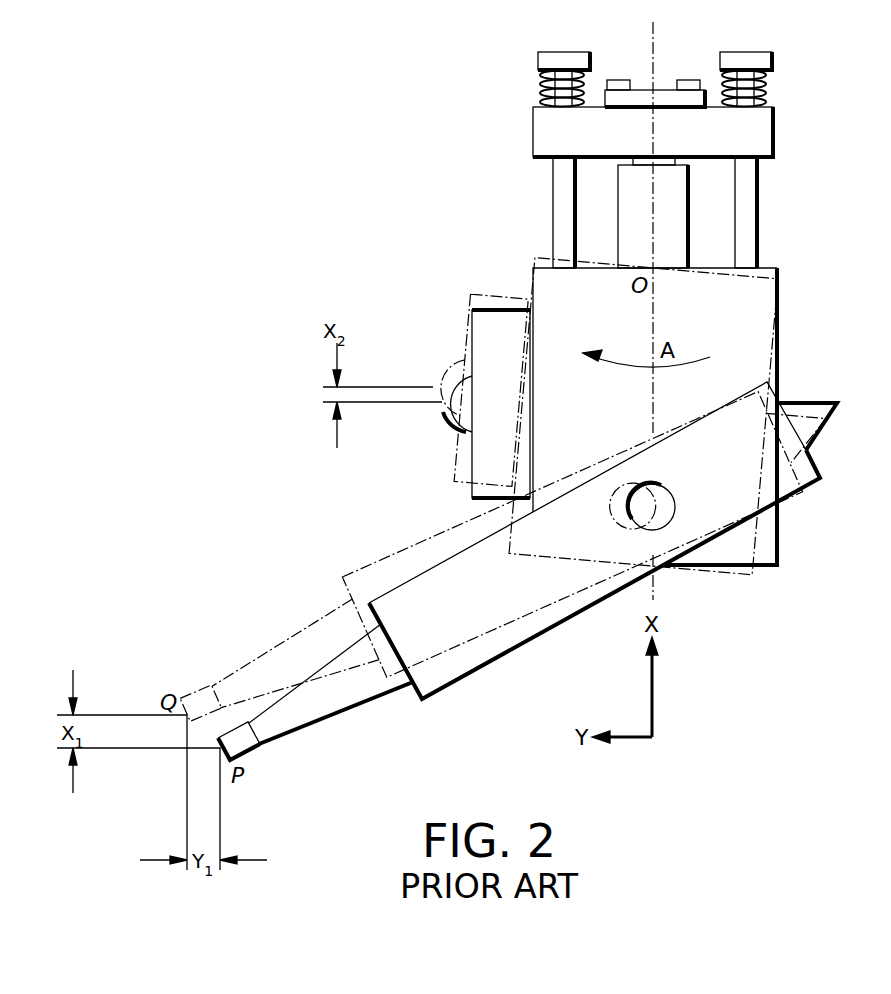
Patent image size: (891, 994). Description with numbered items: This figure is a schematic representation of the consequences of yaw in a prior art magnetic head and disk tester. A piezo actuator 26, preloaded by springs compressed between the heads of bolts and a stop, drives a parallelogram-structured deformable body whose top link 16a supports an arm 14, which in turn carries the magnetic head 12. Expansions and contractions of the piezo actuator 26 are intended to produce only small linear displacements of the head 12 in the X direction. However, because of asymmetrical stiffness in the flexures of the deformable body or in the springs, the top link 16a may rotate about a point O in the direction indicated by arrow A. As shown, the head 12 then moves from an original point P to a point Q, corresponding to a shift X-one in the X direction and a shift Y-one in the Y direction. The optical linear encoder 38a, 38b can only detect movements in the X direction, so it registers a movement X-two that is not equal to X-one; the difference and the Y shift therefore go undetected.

The magnetic head 12 is at (237, 743).
The arm 14 is at (773, 470).
The top link 16a is at (779, 356).
The piezo actuator 26 is at (670, 215).
The optical linear encoder 38a is at (500, 323).
The optical linear encoder 38b is at (453, 397).